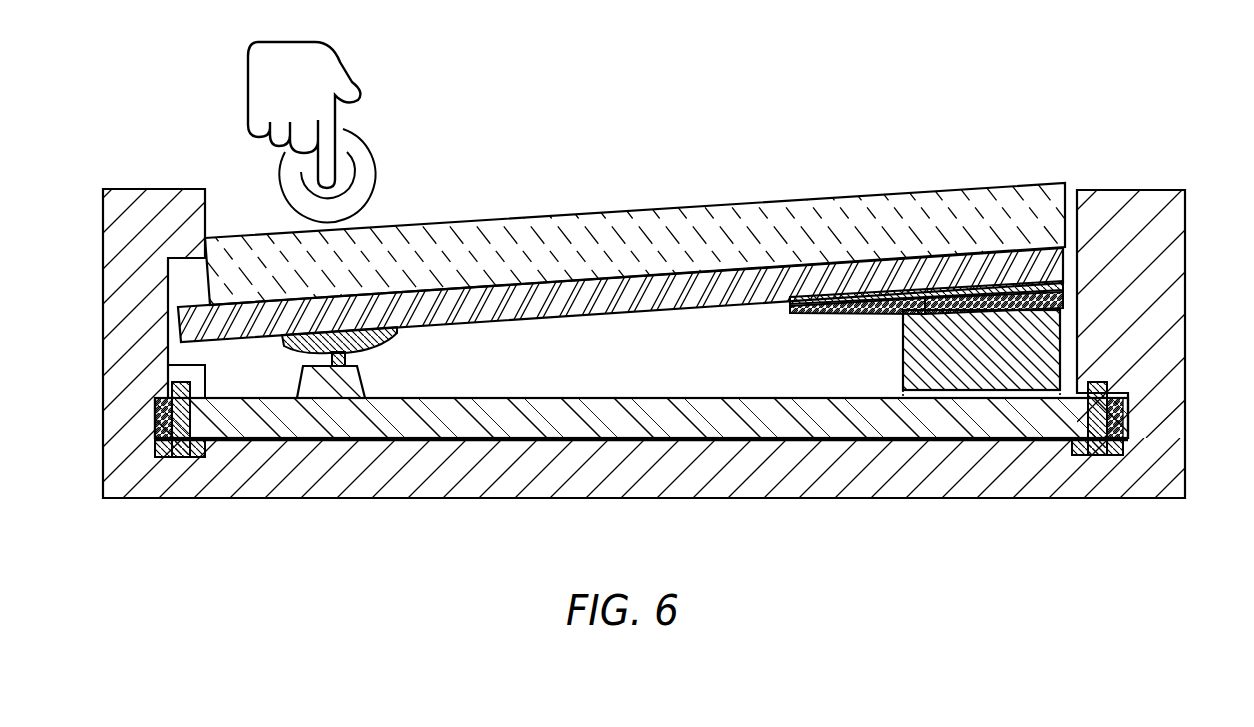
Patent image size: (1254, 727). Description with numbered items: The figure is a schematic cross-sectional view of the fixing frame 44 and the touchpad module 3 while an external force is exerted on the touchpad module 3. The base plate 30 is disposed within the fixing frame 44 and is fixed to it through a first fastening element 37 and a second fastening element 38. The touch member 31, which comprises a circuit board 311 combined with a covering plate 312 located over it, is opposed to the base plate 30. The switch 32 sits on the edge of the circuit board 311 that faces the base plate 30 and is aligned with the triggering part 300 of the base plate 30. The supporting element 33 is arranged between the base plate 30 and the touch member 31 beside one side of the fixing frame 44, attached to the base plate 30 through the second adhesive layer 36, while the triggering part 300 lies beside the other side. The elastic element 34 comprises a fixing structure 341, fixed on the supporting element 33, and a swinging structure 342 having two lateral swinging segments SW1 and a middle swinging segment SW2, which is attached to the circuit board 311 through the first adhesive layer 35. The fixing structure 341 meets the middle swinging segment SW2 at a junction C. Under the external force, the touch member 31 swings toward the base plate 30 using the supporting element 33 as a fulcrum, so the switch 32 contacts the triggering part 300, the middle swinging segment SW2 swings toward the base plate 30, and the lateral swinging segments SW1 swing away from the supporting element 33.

The touchpad module 3 is at (621, 222).
The base plate 30 is at (670, 425).
The triggering part 300 is at (340, 376).
The touch member 31 is at (621, 231).
The circuit board 311 is at (652, 162).
The covering plate 312 is at (620, 240).
The switch 32 is at (362, 327).
The supporting element 33 is at (1045, 343).
The elastic element 34 is at (927, 188).
The fixing structure 341 is at (1032, 281).
The swinging structure 342 is at (926, 209).
The lateral swinging segments SW1 is at (994, 231).
The middle swinging segment SW2 is at (828, 299).
The first adhesive layer 35 is at (1064, 285).
The second adhesive layer 36 is at (970, 399).
The first fastening element 37 is at (1103, 455).
The second fastening element 38 is at (178, 457).
The fixing frame 44 is at (153, 206).
The junction C is at (903, 311).